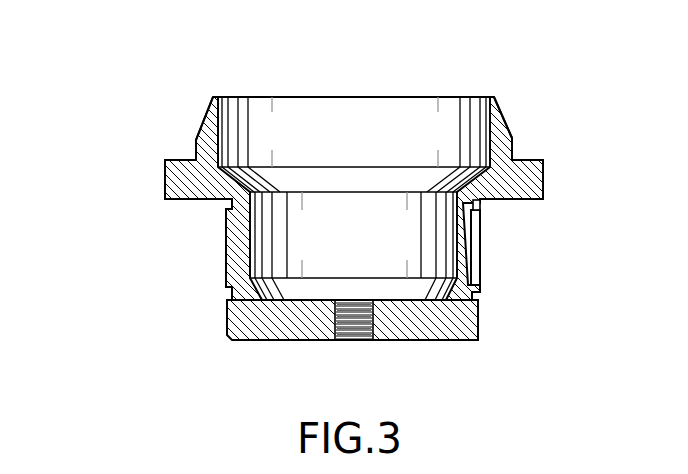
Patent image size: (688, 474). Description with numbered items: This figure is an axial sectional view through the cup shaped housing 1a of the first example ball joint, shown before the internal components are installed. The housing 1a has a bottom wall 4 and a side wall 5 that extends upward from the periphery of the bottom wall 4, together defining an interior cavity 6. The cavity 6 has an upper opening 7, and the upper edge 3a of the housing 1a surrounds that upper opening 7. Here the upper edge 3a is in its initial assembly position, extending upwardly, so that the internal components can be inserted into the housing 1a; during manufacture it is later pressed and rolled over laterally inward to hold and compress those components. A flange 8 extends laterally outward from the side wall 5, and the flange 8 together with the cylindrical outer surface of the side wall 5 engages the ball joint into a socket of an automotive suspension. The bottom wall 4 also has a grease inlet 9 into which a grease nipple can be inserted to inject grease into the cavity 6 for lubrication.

The housing 1a is at (205, 308).
The upper edge 3a is at (213, 96).
The bottom wall 4 is at (413, 320).
The side wall 5 is at (226, 255).
The interior cavity 6 is at (364, 248).
The upper opening 7 is at (318, 96).
The flange 8 is at (543, 175).
The grease inlet 9 is at (352, 318).